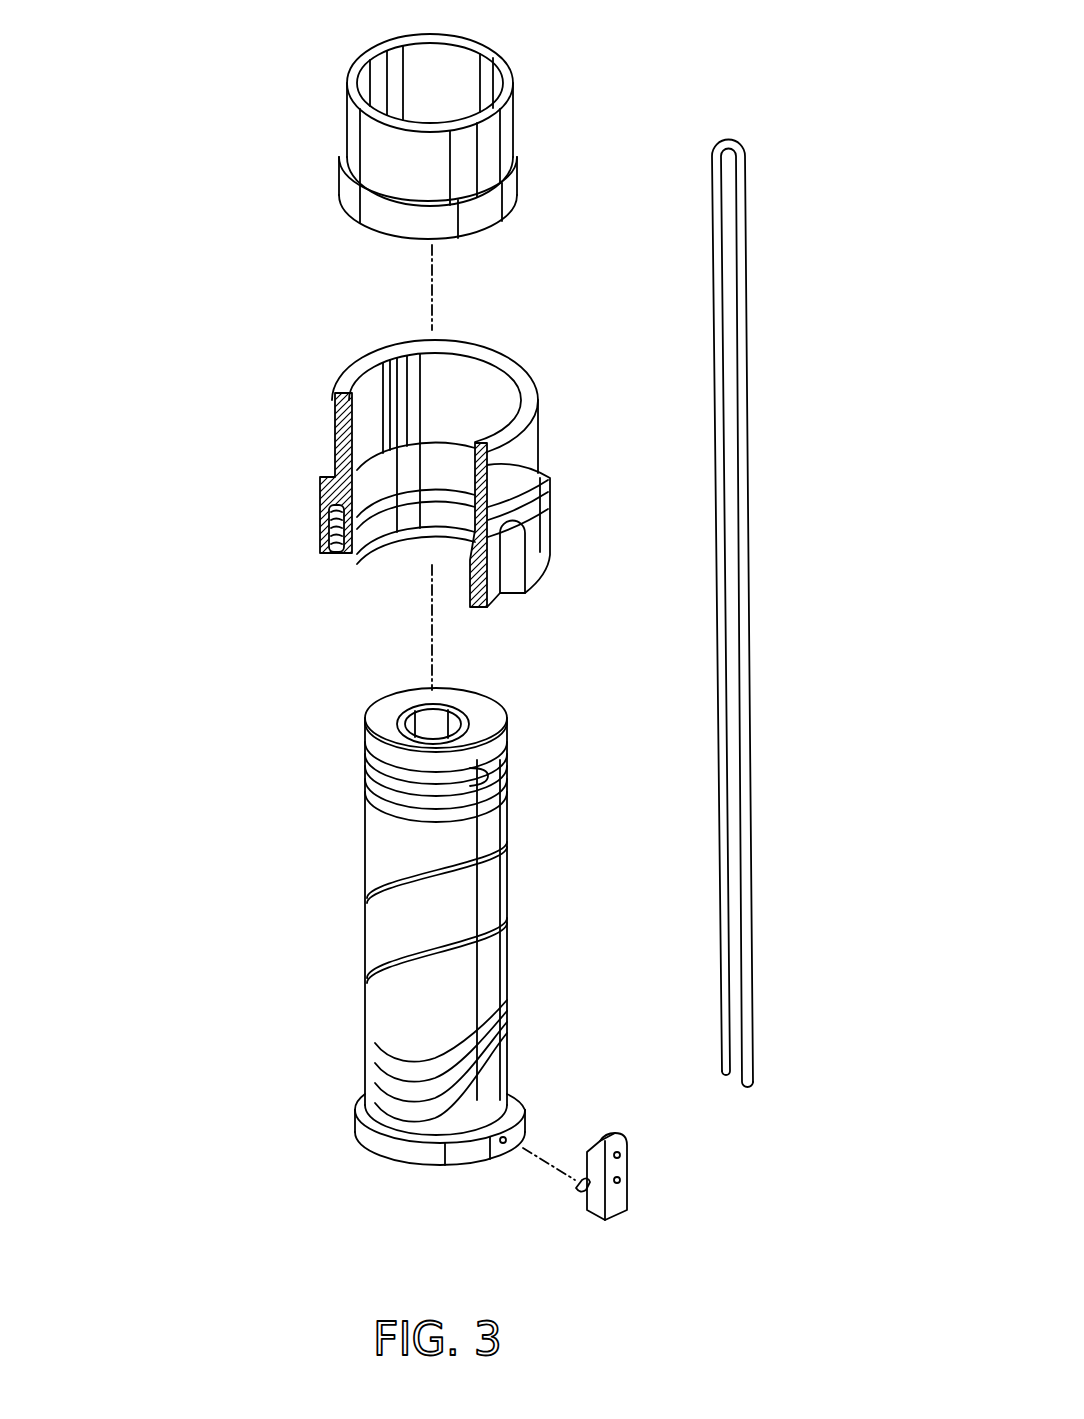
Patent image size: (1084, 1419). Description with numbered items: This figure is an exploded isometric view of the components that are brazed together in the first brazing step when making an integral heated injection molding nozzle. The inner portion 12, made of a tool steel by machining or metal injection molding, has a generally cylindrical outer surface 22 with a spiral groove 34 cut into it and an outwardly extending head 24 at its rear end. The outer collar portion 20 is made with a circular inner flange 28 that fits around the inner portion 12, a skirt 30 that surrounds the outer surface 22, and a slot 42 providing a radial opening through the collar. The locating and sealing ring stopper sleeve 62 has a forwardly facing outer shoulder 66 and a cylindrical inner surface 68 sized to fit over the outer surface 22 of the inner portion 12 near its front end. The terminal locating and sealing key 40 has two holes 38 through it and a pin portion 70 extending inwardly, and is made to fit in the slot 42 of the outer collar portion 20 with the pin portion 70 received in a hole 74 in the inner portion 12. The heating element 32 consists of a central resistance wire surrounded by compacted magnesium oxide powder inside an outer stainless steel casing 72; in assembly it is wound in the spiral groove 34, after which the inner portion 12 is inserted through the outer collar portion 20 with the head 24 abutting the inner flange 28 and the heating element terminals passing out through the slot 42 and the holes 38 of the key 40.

The inner portion 12 is at (446, 950).
The outer collar portion 20 is at (421, 481).
The cylindrical outer surface 22 is at (508, 812).
The head 24 is at (386, 1142).
The inner flange 28 is at (380, 545).
The skirt 30 is at (512, 372).
The heating element 32 is at (749, 730).
The spiral groove 34 is at (501, 918).
The holes 38 is at (622, 1178).
The terminal locating and sealing key 40 is at (644, 1176).
The slot 42 is at (518, 583).
The locating and sealing ring stopper sleeve 62 is at (514, 108).
The forwardly facing outer shoulder 66 is at (518, 146).
The cylindrical inner surface 68 is at (425, 64).
The pin portion 70 is at (576, 1188).
The outer stainless steel casing 72 is at (750, 865).
The hole 74 is at (505, 1150).